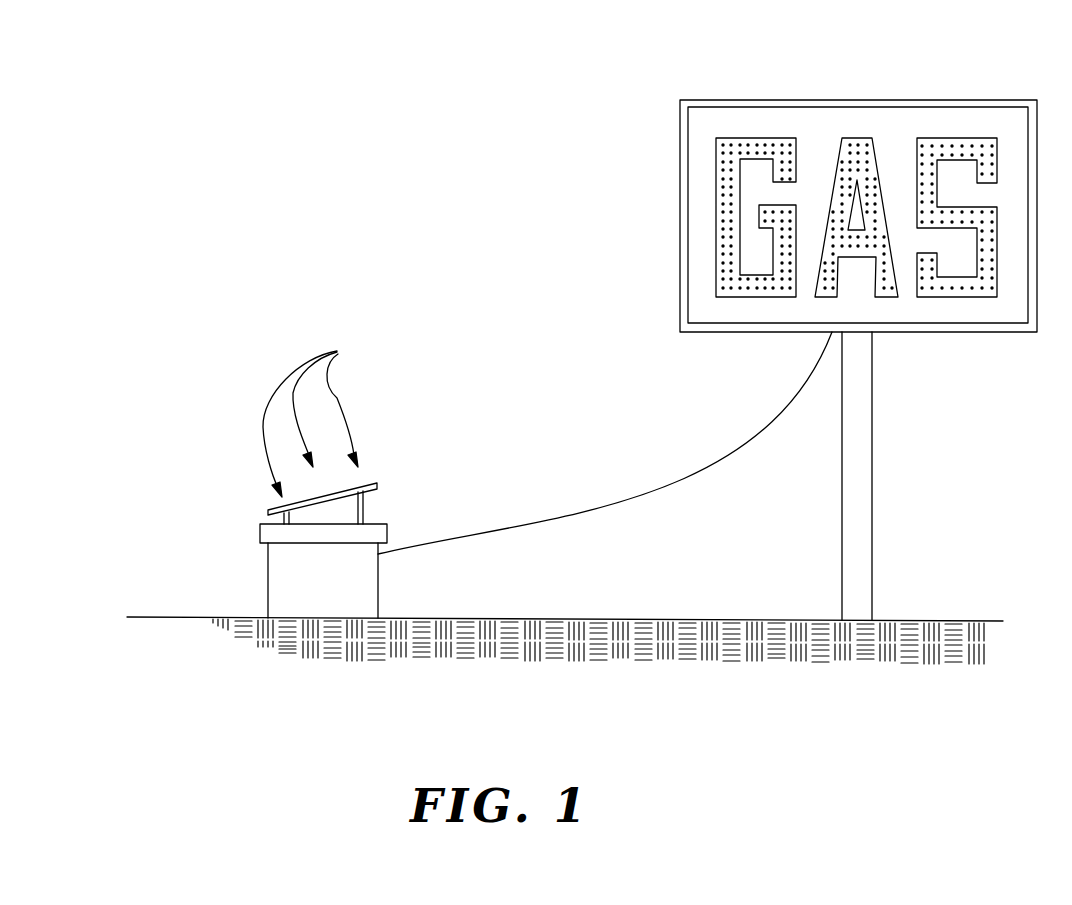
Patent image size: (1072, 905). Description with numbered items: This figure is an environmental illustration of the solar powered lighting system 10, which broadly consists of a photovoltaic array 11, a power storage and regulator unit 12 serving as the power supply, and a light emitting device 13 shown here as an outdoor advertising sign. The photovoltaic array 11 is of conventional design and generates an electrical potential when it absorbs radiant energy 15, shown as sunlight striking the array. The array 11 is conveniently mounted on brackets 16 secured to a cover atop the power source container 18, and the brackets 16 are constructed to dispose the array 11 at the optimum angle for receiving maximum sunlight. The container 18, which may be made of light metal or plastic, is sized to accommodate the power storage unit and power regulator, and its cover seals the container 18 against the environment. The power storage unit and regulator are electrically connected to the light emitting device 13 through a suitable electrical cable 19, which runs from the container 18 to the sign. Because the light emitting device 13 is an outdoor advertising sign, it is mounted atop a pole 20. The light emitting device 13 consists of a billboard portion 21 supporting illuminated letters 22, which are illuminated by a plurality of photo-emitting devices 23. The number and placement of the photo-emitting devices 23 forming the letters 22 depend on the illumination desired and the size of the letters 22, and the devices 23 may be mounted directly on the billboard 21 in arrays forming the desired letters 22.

The solar powered lighting system 10 is at (351, 330).
The photovoltaic array 11 is at (336, 485).
The power storage and regulator unit 12 is at (266, 588).
The light emitting device 13 is at (733, 93).
The radiant energy 15 is at (315, 419).
The brackets 16 is at (281, 521).
The power source container 18 is at (378, 592).
The electrical cable 19 is at (603, 502).
The pole 20 is at (873, 443).
The billboard portion 21 is at (875, 117).
The illuminated letters 22 is at (767, 297).
The photo-emitting devices 23 is at (767, 144).